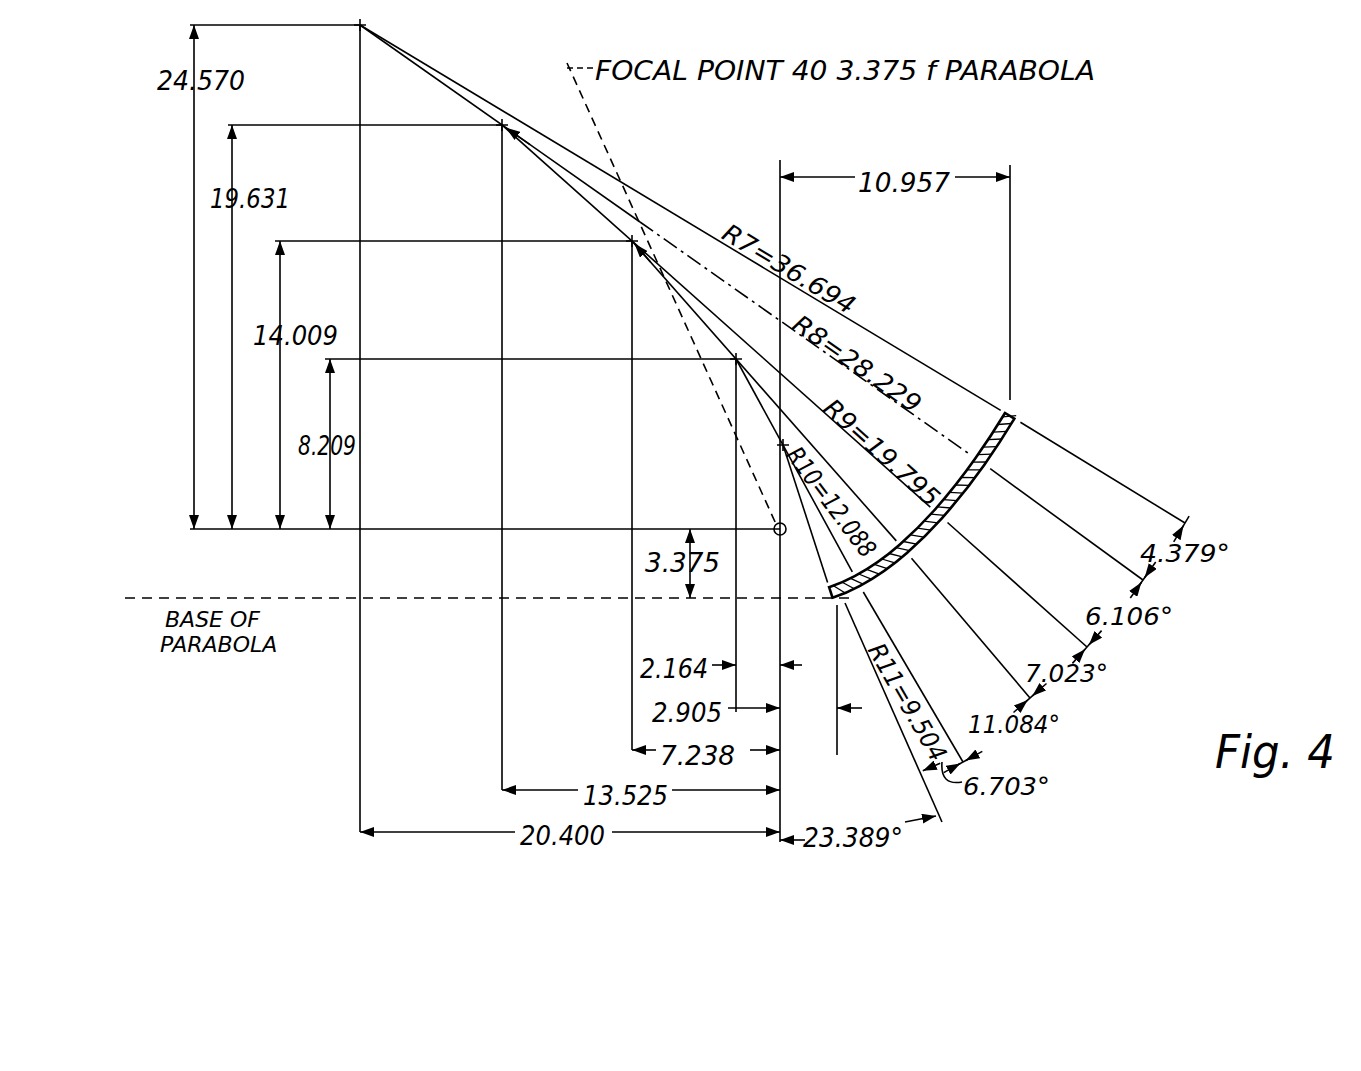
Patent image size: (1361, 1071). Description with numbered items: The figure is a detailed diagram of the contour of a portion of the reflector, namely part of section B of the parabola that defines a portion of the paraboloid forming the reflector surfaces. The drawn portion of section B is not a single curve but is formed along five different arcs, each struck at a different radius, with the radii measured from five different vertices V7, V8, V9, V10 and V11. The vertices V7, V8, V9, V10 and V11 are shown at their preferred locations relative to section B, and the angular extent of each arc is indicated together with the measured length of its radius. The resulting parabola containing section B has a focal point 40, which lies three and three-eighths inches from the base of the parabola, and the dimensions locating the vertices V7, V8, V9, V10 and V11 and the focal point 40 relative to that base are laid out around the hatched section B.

The focal point 40 is at (774, 524).
The section B is at (996, 452).
The vertex V7 is at (367, 24).
The vertex V8 is at (504, 122).
The vertex V9 is at (628, 244).
The vertex V10 is at (733, 362).
The vertex V11 is at (781, 447).